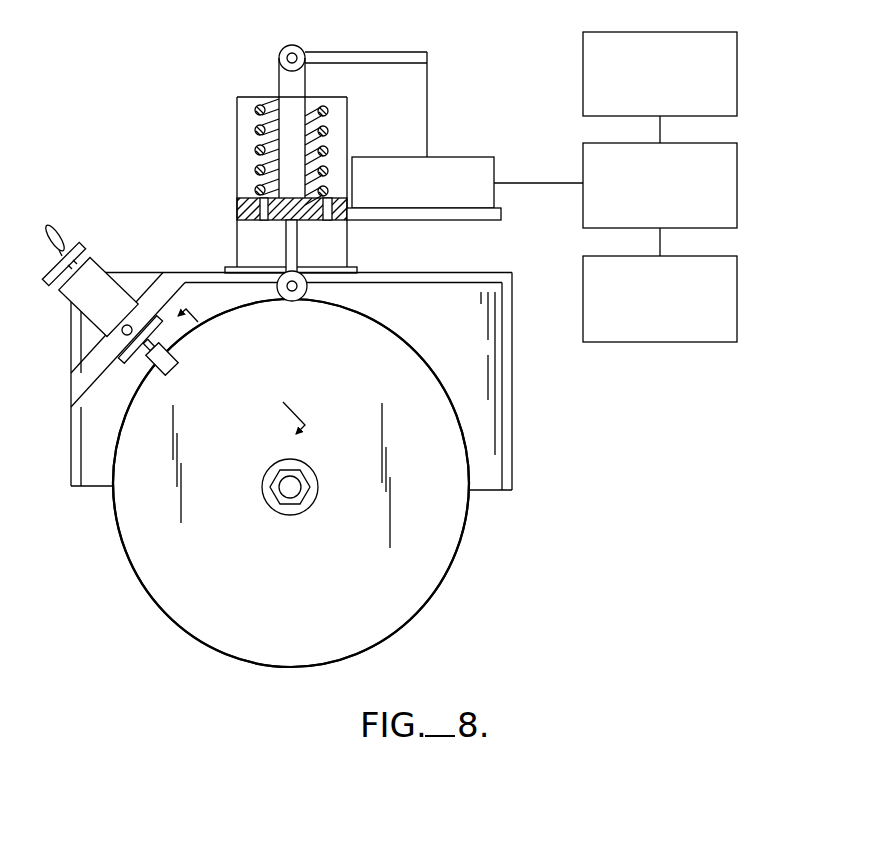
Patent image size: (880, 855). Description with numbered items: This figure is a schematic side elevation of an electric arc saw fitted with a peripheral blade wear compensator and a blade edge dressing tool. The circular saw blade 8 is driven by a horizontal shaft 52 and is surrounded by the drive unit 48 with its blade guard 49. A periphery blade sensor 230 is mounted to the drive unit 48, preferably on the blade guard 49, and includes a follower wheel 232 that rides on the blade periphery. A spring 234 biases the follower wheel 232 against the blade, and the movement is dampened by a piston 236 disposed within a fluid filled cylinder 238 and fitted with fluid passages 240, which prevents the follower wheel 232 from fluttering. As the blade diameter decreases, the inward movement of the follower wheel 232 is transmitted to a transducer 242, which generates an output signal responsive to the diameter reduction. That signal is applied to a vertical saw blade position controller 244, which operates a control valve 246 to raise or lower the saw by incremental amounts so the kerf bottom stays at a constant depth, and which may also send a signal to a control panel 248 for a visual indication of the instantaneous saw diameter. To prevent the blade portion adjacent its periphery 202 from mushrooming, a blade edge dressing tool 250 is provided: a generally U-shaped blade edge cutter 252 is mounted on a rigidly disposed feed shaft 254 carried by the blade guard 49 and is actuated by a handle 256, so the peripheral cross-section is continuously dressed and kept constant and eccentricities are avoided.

The saw blade 8 is at (420, 577).
The drive unit 48 is at (66, 468).
The blade guard 49 is at (88, 437).
The horizontal shaft 52 is at (290, 498).
The periphery 202 is at (367, 651).
The periphery blade sensor 230 is at (168, 110).
The follower wheel 232 is at (308, 292).
The spring 234 is at (263, 106).
The piston 236 is at (237, 207).
The fluid filled cylinder 238 is at (237, 143).
The fluid passages 240 is at (270, 220).
The transducer 242 is at (463, 157).
The vertical saw blade position controller 244 is at (738, 167).
The control valve 246 is at (738, 288).
The control panel 248 is at (657, 32).
The blade edge dressing tool 250 is at (93, 326).
The blade edge cutter 252 is at (176, 358).
The feed shaft 254 is at (144, 358).
The handle 256 is at (68, 252).